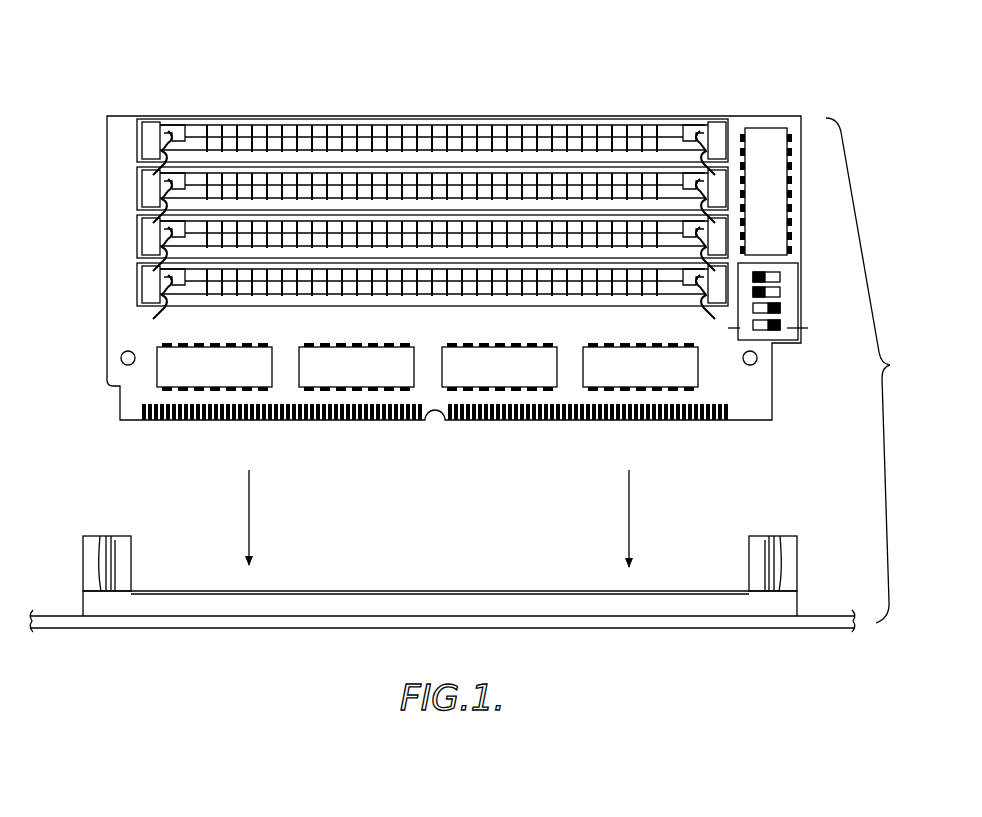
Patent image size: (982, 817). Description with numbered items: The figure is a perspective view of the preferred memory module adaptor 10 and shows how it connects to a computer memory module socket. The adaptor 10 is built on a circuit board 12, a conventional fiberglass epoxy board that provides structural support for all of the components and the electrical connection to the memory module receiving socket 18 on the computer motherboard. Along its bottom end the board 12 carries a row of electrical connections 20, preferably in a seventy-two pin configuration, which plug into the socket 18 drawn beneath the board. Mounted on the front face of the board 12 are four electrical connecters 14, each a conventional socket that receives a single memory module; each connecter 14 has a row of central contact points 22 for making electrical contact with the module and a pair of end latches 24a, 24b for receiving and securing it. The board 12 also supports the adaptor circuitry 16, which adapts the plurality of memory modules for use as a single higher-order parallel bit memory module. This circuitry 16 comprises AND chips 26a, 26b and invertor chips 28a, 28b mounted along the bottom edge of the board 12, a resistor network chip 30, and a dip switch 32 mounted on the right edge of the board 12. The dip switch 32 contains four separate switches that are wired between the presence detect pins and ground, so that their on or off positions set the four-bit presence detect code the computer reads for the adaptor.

The memory module adaptor 10 is at (445, 257).
The circuit board 12 is at (103, 326).
The electrical connecters 14 is at (135, 183).
The adaptor circuitry 16 is at (740, 385).
The memory module receiving socket 18 is at (482, 586).
The electrical connections 20 is at (730, 430).
The central contact points 22 is at (573, 118).
The end latch 24a is at (140, 140).
The end latch 24b is at (723, 135).
The AND chip 26a is at (514, 357).
The AND chip 26b is at (666, 357).
The invertor chip 28a is at (178, 360).
The invertor chip 28b is at (318, 360).
The resistor network chip 30 is at (773, 197).
The dip switch 32 is at (778, 340).